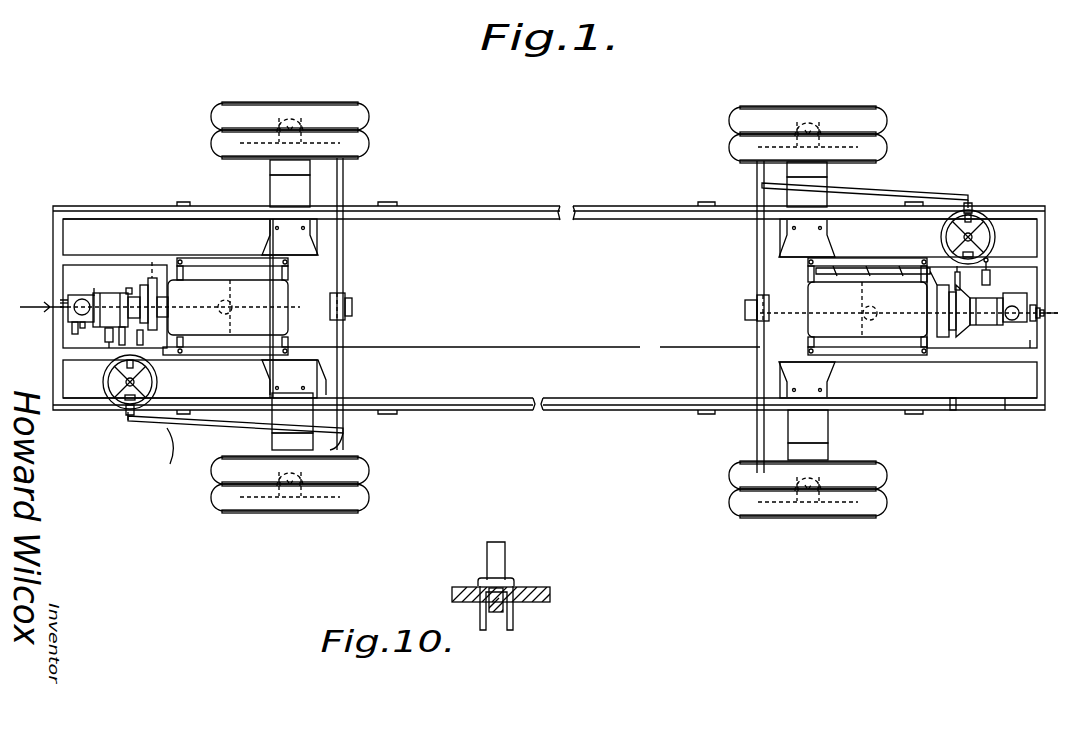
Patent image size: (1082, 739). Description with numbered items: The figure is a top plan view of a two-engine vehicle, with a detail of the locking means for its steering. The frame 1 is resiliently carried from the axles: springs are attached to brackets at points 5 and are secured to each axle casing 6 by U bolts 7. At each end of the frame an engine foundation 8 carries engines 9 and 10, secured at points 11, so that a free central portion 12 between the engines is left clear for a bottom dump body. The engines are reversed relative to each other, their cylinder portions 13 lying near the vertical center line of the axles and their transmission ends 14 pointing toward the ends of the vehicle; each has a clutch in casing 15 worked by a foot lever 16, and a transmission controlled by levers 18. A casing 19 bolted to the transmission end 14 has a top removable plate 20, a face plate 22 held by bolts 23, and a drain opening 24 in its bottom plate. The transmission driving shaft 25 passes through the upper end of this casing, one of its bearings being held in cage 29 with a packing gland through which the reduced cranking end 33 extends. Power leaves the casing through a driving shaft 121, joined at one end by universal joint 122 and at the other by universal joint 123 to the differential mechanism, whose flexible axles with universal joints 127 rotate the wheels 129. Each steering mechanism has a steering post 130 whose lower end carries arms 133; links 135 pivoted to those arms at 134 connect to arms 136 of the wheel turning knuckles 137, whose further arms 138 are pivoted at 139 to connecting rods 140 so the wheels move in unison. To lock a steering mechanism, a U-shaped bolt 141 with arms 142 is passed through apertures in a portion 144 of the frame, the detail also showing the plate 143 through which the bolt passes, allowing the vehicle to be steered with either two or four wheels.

In FIG. 1, the frame 1 is at (563, 399).
In FIG. 1, the spring attachment 5 is at (44, 300).
In FIG. 1, the axle casing 6 is at (310, 192).
In FIG. 1, the U bolts 7 is at (312, 216).
In FIG. 1, the engine foundation 8 is at (215, 258).
In FIG. 1, the engine 9 is at (180, 307).
In FIG. 1, the engine 10 is at (910, 309).
In FIG. 1, the engine securing points 11 is at (180, 259).
In FIG. 1, the central portion 12 is at (534, 390).
In FIG. 1, the cylinder portions 13 is at (546, 308).
In FIG. 1, the transmission end 14 is at (105, 294).
In FIG. 1, the clutch casing 15 is at (134, 296).
In FIG. 1, the foot lever 16 is at (160, 330).
In FIG. 1, the levers 18 is at (108, 343).
In FIG. 1, the casing 19 is at (96, 292).
In FIG. 1, the top removable plate 20 is at (82, 298).
In FIG. 1, the face plate 22 is at (72, 325).
In FIG. 1, the bolts 23 is at (92, 320).
In FIG. 1, the opening 24 is at (1061, 332).
In FIG. 1, the transmission driving shaft 25 is at (1042, 310).
In FIG. 1, the bearing cage 29 is at (68, 300).
In FIG. 1, the reduced cranking end 33 is at (60, 300).
In FIG. 1, the driving shaft 121 is at (153, 262).
In FIG. 1, the universal joint 122 is at (129, 288).
In FIG. 1, the universal joint 123 is at (230, 300).
In FIG. 1, the universal joints 127 is at (298, 120).
In FIG. 1, the wheels 129 is at (345, 104).
In FIG. 1, the steering posts 130 is at (112, 400).
In FIG. 1, the arms 133 is at (130, 416).
In FIG. 1, the pivot connection 134 is at (978, 172).
In FIG. 1, the links 135 is at (200, 424).
In FIG. 1, the knuckle arms 136 is at (345, 437).
In FIG. 1, the wheel turning knuckles 137 is at (279, 118).
In FIG. 1, the knuckle arms 138 is at (335, 128).
In FIG. 1, the pivot connection 139 is at (345, 143).
In FIG. 1, the connecting rods 140 is at (348, 262).
In FIG. 1, the U-shaped bolt 141 is at (128, 408).
In FIG. 10, the U-shaped bolt 141 is at (510, 578).
In FIG. 10, the bolt arms 142 is at (513, 622).
In FIG. 10, the plate 143 is at (552, 594).
In FIG. 1, the frame portion 144 is at (140, 382).
In FIG. 10, the frame portion 144 is at (462, 585).